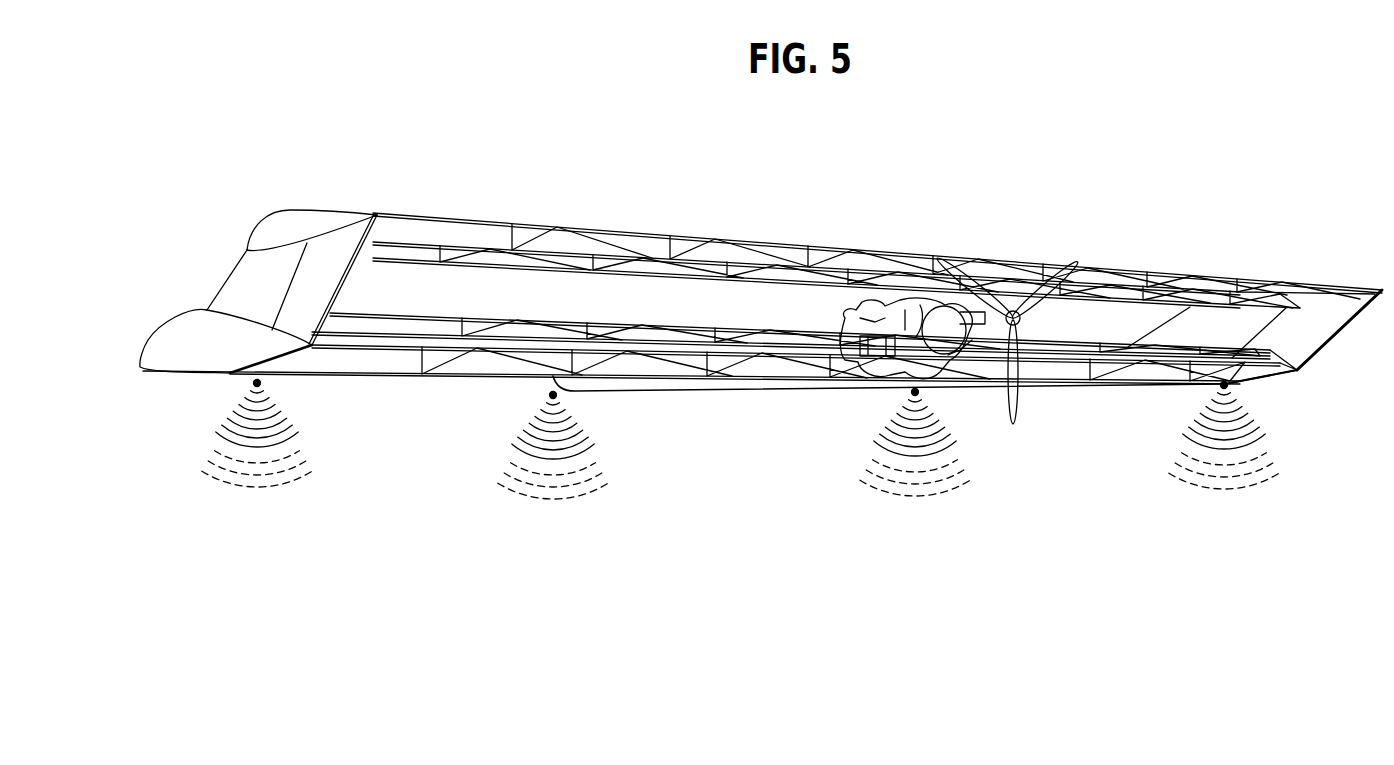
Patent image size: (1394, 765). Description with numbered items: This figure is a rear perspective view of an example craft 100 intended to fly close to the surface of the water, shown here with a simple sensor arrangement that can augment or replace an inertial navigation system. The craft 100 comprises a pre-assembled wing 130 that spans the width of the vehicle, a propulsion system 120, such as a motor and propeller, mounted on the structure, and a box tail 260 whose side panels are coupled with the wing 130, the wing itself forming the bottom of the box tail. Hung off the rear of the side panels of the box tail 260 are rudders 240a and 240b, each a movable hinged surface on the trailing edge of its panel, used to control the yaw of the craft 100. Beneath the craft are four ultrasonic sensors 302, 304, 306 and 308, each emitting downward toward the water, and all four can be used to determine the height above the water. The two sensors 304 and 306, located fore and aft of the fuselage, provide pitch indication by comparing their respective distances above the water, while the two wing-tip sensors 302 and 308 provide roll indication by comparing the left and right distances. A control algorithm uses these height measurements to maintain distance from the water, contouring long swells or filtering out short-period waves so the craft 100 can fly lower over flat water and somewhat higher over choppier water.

The craft 100 is at (1097, 204).
The propulsion system 120 is at (937, 298).
The pre-assembled wing 130 is at (138, 331).
The rudder 240a is at (332, 248).
The rudder 240b is at (1307, 333).
The box tail 260 is at (697, 226).
The ultrasonic sensor 302 is at (253, 374).
The ultrasonic sensor 304 is at (550, 377).
The ultrasonic sensor 306 is at (912, 382).
The ultrasonic sensor 308 is at (1215, 384).